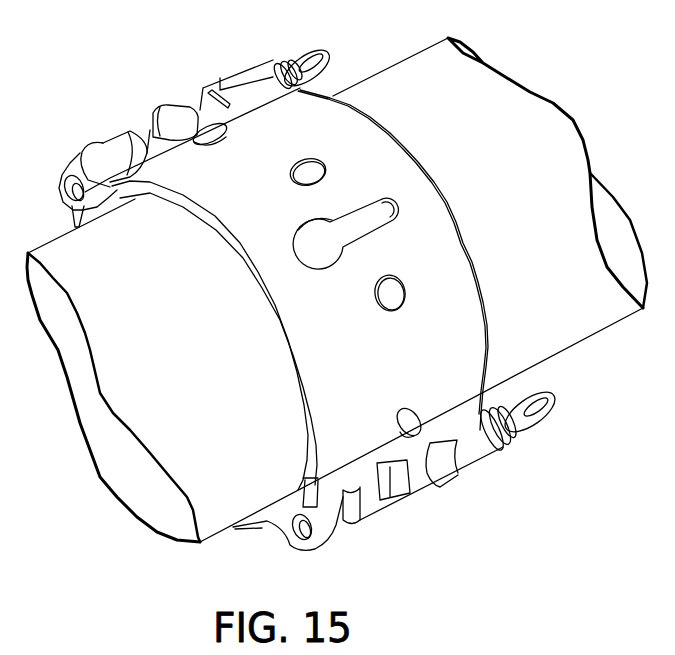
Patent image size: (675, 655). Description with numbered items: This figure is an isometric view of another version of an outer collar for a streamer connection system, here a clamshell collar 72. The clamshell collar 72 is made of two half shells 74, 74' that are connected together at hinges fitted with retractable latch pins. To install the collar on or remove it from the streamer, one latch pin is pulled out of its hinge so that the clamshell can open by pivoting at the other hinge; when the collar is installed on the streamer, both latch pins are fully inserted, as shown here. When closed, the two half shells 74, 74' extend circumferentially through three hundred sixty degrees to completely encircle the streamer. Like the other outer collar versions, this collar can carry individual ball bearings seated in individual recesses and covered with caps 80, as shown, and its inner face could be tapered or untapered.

The clamshell collar 72 is at (482, 363).
The half shell 74 is at (246, 290).
The half shell 74' is at (296, 526).
The cap 80 is at (413, 425).